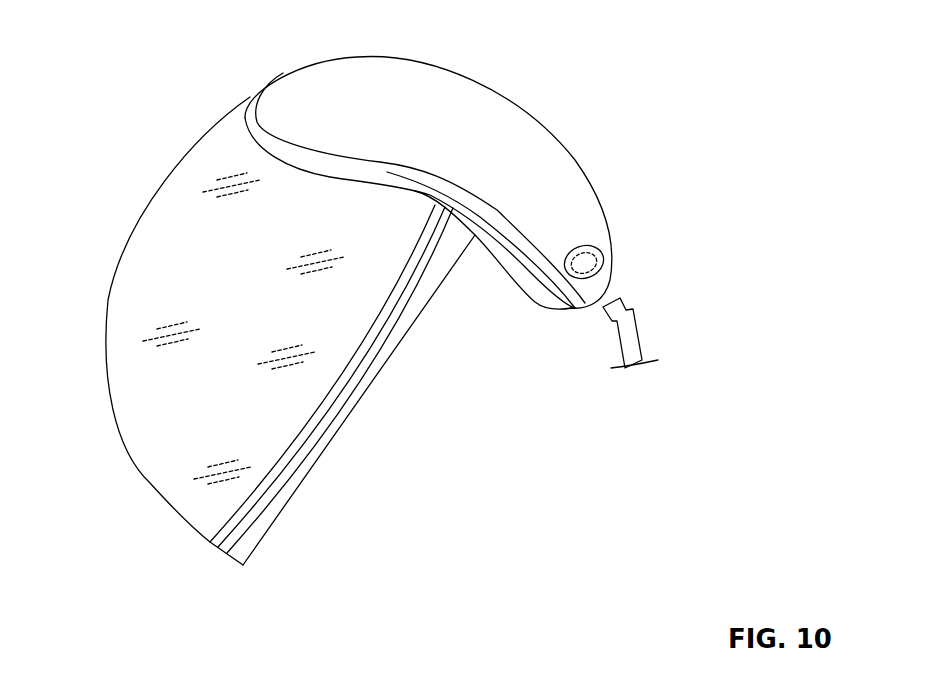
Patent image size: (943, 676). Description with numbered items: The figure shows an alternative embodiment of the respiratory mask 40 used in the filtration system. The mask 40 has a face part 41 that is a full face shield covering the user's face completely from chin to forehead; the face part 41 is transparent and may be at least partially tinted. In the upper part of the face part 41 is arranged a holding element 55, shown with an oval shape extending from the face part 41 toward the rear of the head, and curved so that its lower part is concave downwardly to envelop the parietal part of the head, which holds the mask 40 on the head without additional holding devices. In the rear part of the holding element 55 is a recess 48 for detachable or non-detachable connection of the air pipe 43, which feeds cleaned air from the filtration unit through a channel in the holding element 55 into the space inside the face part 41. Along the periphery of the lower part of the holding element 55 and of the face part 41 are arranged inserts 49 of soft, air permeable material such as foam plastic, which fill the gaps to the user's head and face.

The mask 40 is at (169, 134).
The face part 41 is at (132, 293).
The air pipe 43 is at (630, 350).
The recess 48 is at (578, 270).
The inserts 49 is at (505, 238).
The holding element 55 is at (450, 105).